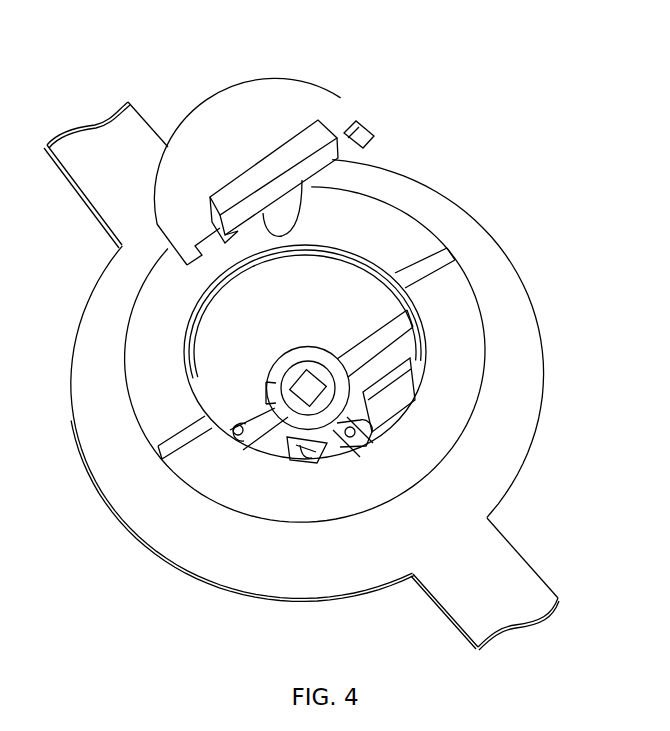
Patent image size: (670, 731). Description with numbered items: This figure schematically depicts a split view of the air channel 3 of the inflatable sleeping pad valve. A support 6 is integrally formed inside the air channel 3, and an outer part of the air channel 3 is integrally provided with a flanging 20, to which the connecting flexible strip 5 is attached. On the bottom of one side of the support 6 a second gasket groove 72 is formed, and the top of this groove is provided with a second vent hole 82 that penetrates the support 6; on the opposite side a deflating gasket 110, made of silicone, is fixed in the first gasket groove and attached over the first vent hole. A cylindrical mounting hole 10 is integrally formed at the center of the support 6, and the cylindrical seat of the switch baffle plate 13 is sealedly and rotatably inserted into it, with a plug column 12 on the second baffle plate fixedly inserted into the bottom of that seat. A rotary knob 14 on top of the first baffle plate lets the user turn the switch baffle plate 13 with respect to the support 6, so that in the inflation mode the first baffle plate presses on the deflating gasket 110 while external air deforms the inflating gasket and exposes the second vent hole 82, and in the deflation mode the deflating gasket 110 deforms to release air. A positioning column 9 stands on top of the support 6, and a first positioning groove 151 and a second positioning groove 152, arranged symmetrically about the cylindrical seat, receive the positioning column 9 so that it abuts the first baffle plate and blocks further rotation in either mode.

The air channel 3 is at (557, 174).
The connecting flexible strip 5 is at (525, 558).
The support 6 is at (371, 331).
The positioning column 9 is at (241, 436).
The cylindrical mounting hole 10 is at (303, 355).
The plug column 12 is at (295, 388).
The switch baffle plate 13 is at (322, 93).
The rotary knob 14 is at (277, 150).
The flanging 20 is at (522, 320).
The second gasket groove 72 is at (292, 433).
The second vent hole 82 is at (309, 457).
The deflating gasket 110 is at (228, 338).
The first positioning groove 151 is at (197, 247).
The second positioning groove 152 is at (355, 133).